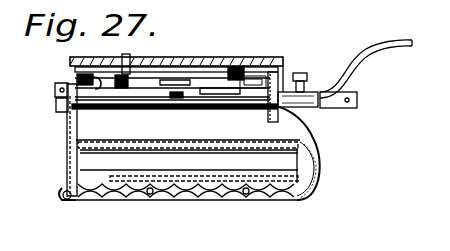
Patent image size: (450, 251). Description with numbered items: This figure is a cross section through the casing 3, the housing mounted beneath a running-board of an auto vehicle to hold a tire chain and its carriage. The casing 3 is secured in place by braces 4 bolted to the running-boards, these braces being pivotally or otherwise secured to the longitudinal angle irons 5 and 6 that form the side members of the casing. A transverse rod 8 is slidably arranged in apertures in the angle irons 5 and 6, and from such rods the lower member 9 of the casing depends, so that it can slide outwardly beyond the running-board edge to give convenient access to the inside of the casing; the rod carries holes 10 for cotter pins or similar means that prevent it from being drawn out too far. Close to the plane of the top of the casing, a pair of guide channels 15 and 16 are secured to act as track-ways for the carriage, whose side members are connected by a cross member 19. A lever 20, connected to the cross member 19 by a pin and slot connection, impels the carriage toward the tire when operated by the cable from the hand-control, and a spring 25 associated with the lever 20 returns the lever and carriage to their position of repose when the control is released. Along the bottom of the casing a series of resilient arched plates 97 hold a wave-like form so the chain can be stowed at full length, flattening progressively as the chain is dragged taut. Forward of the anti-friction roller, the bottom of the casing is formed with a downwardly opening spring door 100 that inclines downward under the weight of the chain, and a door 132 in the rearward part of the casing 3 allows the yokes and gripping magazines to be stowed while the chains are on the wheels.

The casing 3 is at (64, 128).
The braces 4 is at (178, 58).
The longitudinal angle iron 5 is at (72, 77).
The longitudinal angle iron 6 is at (283, 78).
The transverse rod 8 is at (253, 96).
The lower member of the casing 9 is at (320, 149).
The holes 10 is at (357, 94).
The guide channel 15 is at (237, 84).
The guide channel 16 is at (108, 86).
The cross member 19 is at (148, 84).
The lever 20 is at (331, 88).
The spring 25 is at (308, 108).
The resilient arched plate 97 is at (276, 147).
The spring door 100 is at (208, 212).
The door 132 is at (64, 158).